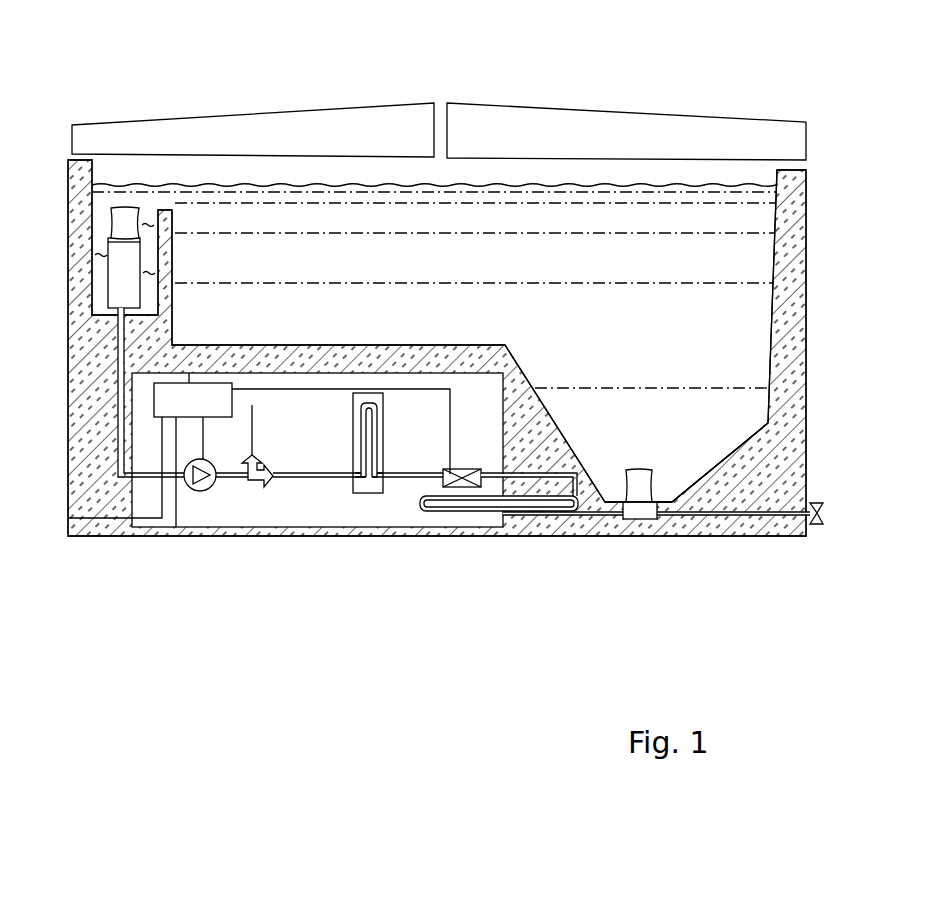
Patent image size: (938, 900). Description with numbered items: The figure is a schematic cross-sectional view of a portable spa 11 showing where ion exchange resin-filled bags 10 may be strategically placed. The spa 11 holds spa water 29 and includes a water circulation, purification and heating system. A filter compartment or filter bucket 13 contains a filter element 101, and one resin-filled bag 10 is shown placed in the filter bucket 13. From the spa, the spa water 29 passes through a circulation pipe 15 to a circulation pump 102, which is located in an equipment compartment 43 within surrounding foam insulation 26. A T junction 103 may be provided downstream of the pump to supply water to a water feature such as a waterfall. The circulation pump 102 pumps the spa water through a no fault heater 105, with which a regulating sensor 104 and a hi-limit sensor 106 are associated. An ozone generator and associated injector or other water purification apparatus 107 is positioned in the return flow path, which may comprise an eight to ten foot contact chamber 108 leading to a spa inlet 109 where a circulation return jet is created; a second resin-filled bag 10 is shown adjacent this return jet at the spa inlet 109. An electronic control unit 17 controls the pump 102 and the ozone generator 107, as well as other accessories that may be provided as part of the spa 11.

The ion exchange resin-filled bag 10 is at (126, 203).
The portable spa 11 is at (836, 243).
The filter compartment 13 is at (105, 228).
The circulation pipe 15 is at (147, 482).
The electronic control unit 17 is at (189, 370).
The insulation 26 is at (772, 488).
The spa water 29 is at (520, 272).
The equipment compartment 43 is at (327, 515).
The filter element 101 is at (106, 240).
The circulation pump 102 is at (208, 461).
The T junction 103 is at (257, 459).
The regulating sensor 104 is at (353, 477).
The no fault heater 105 is at (385, 410).
The hi-limit sensor 106 is at (383, 477).
The ozone generator 107 is at (465, 469).
The contact chamber 108 is at (531, 468).
The spa inlet 109 is at (643, 519).